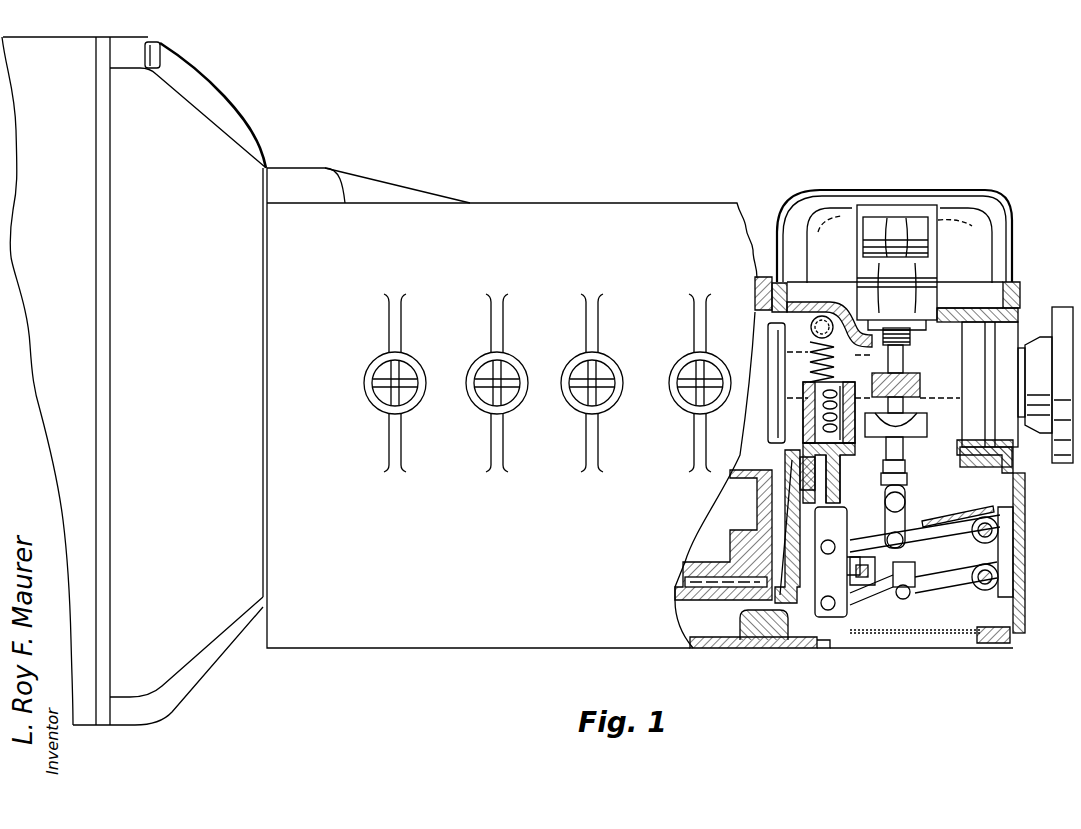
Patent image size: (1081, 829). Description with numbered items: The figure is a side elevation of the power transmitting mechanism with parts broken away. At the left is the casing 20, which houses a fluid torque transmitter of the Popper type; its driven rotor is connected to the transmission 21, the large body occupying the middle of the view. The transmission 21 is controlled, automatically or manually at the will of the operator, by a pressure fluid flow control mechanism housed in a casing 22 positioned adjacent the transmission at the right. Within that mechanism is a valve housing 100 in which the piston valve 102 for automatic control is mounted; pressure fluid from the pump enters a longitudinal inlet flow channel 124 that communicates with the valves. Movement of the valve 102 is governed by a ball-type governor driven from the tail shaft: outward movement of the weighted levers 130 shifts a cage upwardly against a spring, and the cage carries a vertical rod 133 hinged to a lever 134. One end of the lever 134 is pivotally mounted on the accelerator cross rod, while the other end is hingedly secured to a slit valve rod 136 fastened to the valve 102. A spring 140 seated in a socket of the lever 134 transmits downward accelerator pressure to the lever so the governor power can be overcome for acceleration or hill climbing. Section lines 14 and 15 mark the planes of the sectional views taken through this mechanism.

The section line 14 is at (897, 700).
The section line 15 is at (985, 700).
The casing 20 is at (202, 150).
The transmission 21 is at (530, 218).
The casing 22 is at (818, 202).
The valve housing 100 is at (850, 385).
The piston valve 102 is at (820, 405).
The longitudinal inlet flow channel 124 is at (857, 208).
The weighted levers 130 is at (905, 240).
The vertical rod 133 is at (904, 452).
The lever 134 is at (924, 549).
The slit valve rod 136 is at (848, 523).
The spring 140 is at (932, 522).